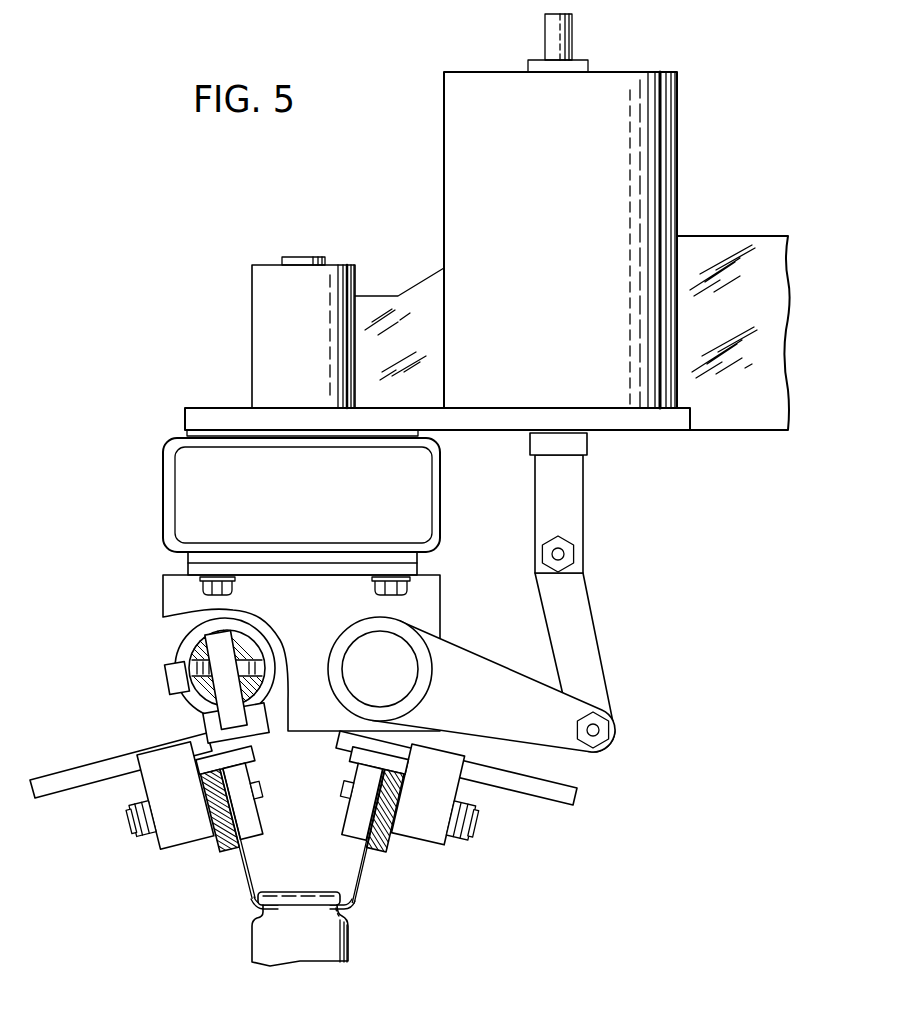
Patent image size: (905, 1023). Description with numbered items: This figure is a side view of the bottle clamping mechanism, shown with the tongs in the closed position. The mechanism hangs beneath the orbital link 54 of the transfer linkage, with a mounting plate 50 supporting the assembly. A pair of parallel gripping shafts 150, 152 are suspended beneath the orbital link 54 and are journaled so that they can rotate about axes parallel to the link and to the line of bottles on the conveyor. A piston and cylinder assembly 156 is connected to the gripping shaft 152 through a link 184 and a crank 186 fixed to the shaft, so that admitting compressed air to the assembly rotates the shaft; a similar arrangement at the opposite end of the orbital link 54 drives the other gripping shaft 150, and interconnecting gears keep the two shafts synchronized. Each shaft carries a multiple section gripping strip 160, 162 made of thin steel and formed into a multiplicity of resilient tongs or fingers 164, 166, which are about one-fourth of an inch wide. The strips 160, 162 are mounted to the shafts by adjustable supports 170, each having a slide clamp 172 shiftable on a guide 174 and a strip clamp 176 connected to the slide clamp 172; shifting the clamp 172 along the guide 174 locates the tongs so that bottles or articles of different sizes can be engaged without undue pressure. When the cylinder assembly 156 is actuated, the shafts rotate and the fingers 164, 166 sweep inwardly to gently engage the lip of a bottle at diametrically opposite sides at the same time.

The support plate 50 is at (722, 237).
The orbital link 54 is at (163, 468).
The gripping shaft 150 is at (195, 650).
The gripping shaft 152 is at (360, 635).
The piston and cylinder assembly 156 is at (672, 120).
The gripping strip 160 is at (222, 853).
The gripping strip 162 is at (380, 856).
The resilient tongs or fingers 164 is at (250, 896).
The resilient tongs or fingers 166 is at (358, 880).
The adjustable support 170 is at (142, 745).
The slide clamp 172 is at (452, 752).
The guide 174 is at (567, 790).
The strip clamp 176 is at (360, 812).
The link 184 is at (583, 612).
The crank 186 is at (478, 667).